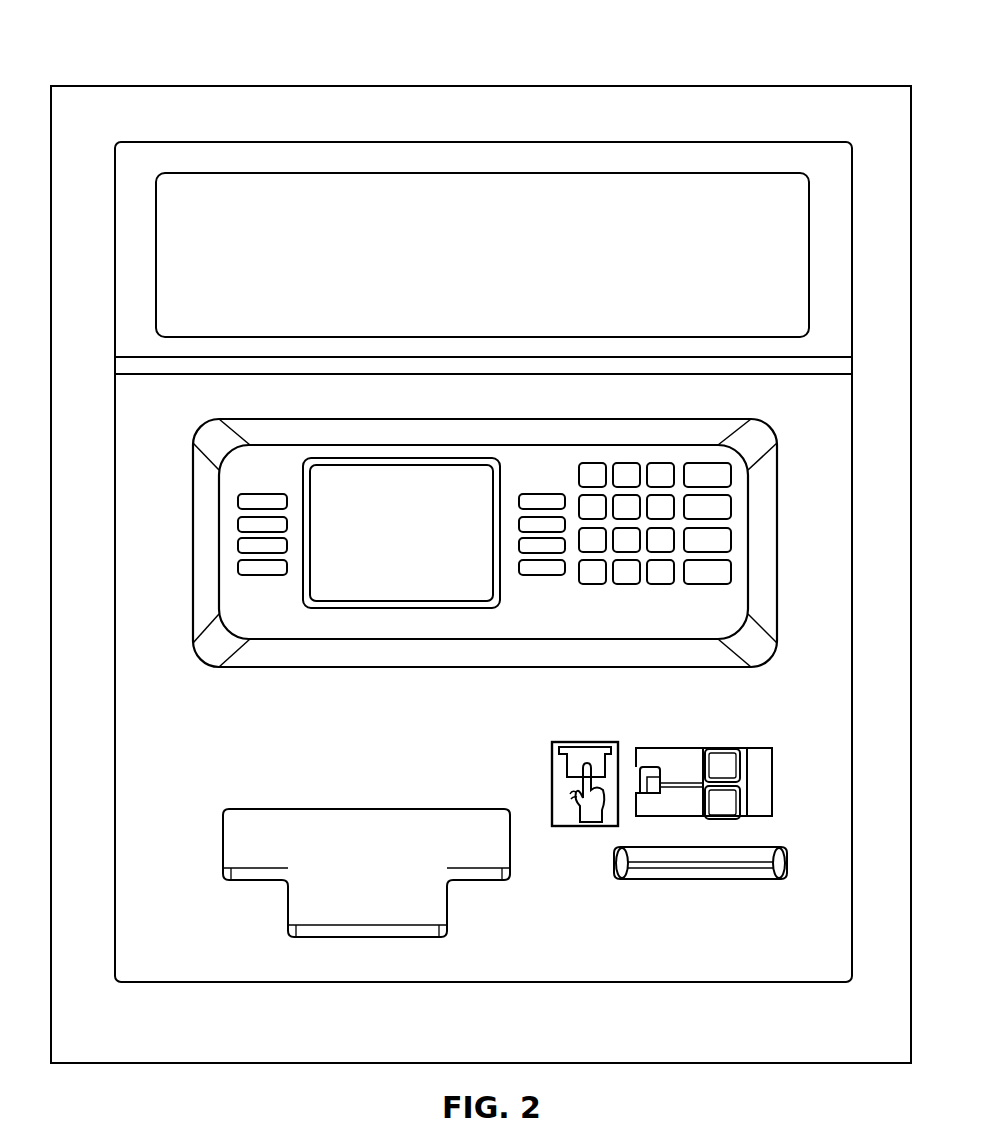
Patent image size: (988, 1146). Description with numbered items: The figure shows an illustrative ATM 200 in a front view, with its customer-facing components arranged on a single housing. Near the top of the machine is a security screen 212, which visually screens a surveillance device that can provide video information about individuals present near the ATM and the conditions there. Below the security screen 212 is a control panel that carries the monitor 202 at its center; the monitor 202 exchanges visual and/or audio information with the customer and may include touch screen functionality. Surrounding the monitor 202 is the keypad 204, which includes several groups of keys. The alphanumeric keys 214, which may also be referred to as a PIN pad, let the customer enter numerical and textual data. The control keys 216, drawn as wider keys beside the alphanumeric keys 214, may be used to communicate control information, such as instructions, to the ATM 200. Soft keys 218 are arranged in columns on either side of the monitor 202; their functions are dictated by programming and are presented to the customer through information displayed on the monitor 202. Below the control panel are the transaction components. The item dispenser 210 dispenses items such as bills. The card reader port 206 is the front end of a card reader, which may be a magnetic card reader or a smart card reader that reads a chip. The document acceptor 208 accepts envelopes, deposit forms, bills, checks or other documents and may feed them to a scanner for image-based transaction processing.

The ATM 200 is at (113, 50).
The monitor 202 is at (430, 465).
The keypad 204 is at (534, 620).
The card reader port 206 is at (757, 748).
The document acceptor 208 is at (769, 848).
The item dispenser 210 is at (253, 808).
The security screen 212 is at (724, 172).
The alphanumeric keys 214 is at (596, 588).
The control keys 216 is at (712, 458).
The soft keys 218 is at (267, 483).